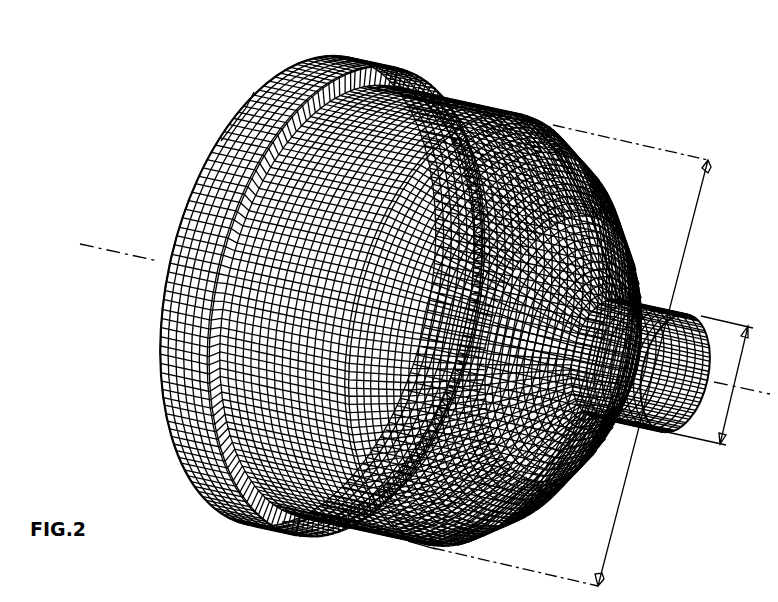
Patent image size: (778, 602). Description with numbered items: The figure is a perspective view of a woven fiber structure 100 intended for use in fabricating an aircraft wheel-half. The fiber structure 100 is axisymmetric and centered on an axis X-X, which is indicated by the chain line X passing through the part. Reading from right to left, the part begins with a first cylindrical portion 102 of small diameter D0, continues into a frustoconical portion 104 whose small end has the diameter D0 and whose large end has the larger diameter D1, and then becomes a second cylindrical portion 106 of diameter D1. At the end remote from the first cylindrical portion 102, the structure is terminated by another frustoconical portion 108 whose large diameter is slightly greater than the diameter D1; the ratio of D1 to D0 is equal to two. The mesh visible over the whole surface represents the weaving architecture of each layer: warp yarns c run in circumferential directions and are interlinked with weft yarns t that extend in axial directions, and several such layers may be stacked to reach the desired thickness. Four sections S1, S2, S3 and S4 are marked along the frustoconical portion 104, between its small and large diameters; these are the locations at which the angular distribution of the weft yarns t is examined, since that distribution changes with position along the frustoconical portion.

The fiber structure 100 is at (167, 190).
The frustoconical portion 108 is at (392, 64).
The second cylindrical portion 106 is at (521, 108).
The frustoconical portion 104 is at (650, 135).
The first cylindrical portion 102 is at (699, 291).
The weft yarns t is at (213, 133).
The warp yarns c is at (306, 510).
The axis X is at (425, 302).
The large diameter D1 is at (572, 355).
The small diameter D0 is at (698, 380).
The section S1 is at (411, 542).
The section S2 is at (507, 504).
The section S3 is at (551, 461).
The section S4 is at (592, 420).